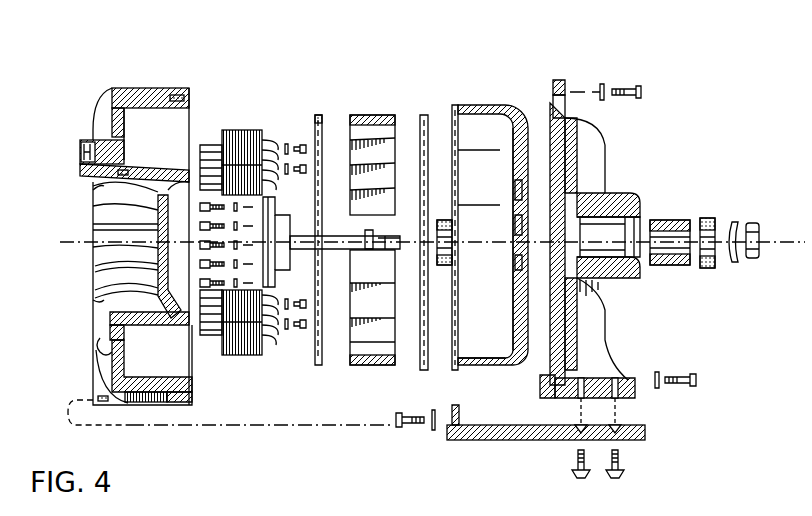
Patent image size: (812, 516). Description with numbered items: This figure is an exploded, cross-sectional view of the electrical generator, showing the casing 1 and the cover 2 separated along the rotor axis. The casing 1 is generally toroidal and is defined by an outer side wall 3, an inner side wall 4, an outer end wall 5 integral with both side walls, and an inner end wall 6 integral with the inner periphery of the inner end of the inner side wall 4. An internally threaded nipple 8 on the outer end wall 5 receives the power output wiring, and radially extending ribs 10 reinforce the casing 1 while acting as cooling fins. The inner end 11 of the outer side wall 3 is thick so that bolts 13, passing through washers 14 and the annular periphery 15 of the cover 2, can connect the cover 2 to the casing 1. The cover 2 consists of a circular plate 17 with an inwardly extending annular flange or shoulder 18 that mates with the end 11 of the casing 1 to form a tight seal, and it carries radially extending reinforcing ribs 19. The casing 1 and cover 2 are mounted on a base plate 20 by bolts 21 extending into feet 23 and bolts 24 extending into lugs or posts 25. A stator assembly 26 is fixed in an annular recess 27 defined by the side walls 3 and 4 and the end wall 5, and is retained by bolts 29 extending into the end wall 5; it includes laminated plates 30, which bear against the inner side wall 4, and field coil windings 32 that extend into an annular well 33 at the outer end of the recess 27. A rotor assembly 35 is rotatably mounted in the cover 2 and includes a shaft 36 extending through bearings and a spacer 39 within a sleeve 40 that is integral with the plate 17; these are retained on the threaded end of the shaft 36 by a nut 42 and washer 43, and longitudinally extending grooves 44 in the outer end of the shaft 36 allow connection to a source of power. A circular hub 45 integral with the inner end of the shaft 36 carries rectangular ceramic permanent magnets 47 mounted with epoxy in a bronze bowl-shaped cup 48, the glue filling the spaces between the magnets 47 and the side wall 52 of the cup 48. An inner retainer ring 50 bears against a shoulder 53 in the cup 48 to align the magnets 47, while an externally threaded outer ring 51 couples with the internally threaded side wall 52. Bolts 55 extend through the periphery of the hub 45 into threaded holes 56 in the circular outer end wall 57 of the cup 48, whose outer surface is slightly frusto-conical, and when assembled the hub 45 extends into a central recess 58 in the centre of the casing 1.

The casing 1 is at (110, 80).
The cover 2 is at (584, 76).
The outer side wall 3 is at (147, 96).
The inner side wall 4 is at (150, 172).
The outer end wall 5 is at (112, 122).
The inner end wall 6 is at (158, 256).
The internally threaded nipple 8 is at (80, 152).
The ribs 10 is at (100, 204).
The inner end 11 is at (182, 88).
The bolts 13 is at (632, 92).
The washers 14 is at (665, 388).
The annular periphery 15 is at (556, 80).
The circular plate 17 is at (578, 186).
The annular flange or shoulder 18 is at (555, 100).
The reinforcing ribs 19 is at (596, 166).
The base plate 20 is at (640, 430).
The bolts 21 is at (590, 470).
The feet 23 is at (602, 384).
The bolts 24 is at (410, 428).
The lugs or posts 25 is at (456, 416).
The stator assembly 26 is at (240, 100).
The annular recess 27 is at (160, 404).
The bolts 29 is at (300, 168).
The laminated plates 30 is at (246, 130).
The field coil windings 32 is at (212, 356).
The annular well 33 is at (100, 345).
The rotor assembly 35 is at (518, 66).
The shaft 36 is at (316, 236).
The spacer 39 is at (678, 264).
The sleeve 40 is at (648, 200).
The nut 42 is at (755, 252).
The washer 43 is at (734, 224).
The grooves 44 is at (440, 226).
The circular hub 45 is at (278, 272).
The permanent magnets 47 is at (378, 114).
The cup 48 is at (460, 106).
The inner retainer ring 50 is at (420, 370).
The outer ring 51 is at (324, 372).
The side wall 52 is at (480, 106).
The shoulder 53 is at (508, 355).
The bolts 55 is at (212, 200).
The threaded holes 56 is at (514, 208).
The outer end wall 57 is at (512, 296).
The central recess 58 is at (156, 198).